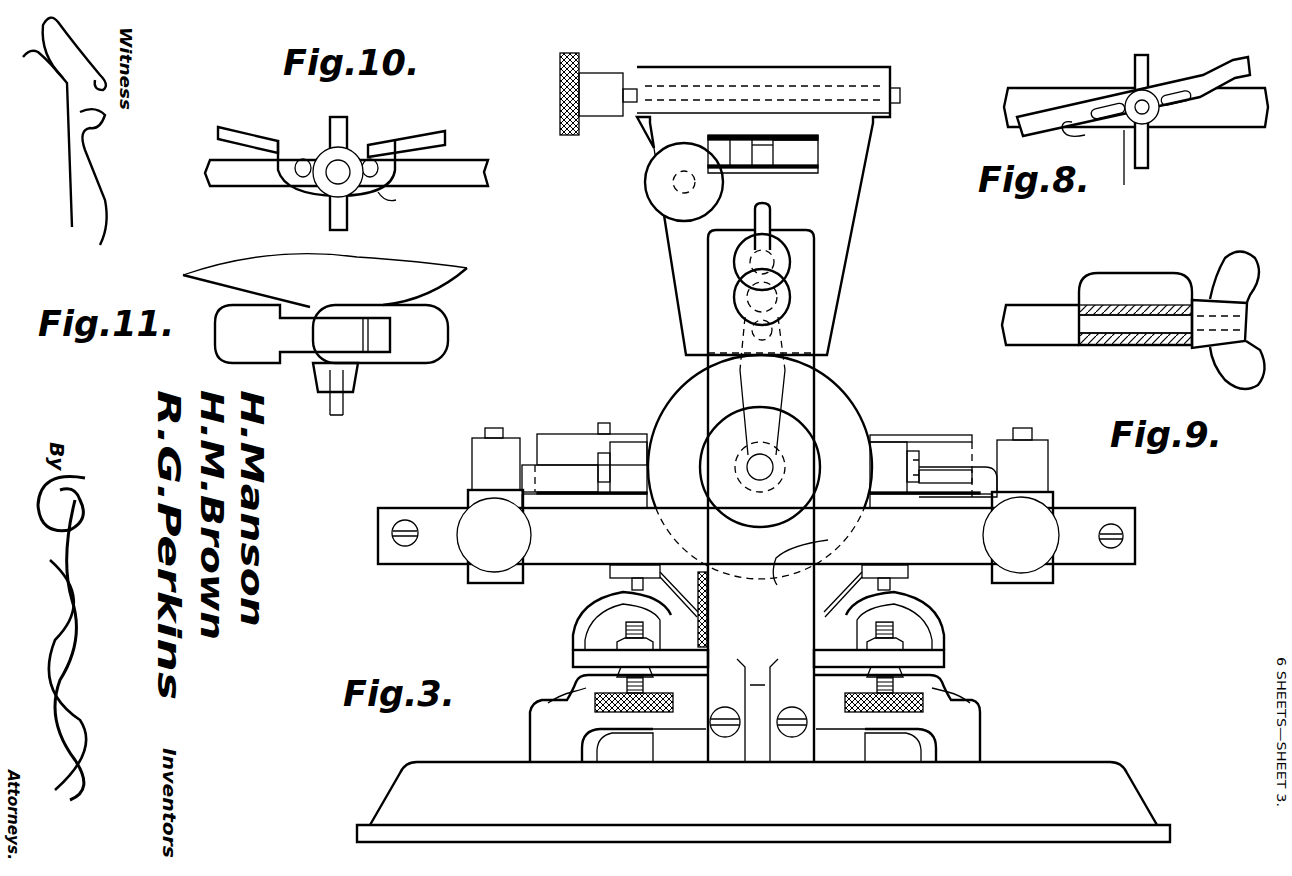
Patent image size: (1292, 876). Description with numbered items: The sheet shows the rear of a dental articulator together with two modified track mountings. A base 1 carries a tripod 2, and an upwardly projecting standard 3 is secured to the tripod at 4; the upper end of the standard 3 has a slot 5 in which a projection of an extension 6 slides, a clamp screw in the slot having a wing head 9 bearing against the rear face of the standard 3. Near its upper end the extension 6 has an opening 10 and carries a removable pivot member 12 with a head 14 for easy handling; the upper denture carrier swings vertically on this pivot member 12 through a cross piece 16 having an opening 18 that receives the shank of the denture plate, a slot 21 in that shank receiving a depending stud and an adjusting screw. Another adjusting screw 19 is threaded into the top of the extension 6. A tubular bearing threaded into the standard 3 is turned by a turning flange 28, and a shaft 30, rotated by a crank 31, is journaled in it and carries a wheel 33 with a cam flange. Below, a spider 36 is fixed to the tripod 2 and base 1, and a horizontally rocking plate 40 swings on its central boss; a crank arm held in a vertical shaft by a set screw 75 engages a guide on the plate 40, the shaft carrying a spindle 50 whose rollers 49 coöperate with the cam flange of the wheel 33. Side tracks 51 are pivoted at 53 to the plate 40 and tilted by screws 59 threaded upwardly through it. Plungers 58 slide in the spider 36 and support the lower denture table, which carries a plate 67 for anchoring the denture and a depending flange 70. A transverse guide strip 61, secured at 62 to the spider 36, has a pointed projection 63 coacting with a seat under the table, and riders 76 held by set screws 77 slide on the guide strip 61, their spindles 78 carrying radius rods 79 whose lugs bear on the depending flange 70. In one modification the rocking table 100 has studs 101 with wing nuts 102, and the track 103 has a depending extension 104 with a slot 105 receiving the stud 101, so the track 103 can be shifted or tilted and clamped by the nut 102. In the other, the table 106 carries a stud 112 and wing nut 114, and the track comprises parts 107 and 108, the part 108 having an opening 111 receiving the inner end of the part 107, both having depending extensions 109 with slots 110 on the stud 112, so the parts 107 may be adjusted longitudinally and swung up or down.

In FIG. 3, the base 1 is at (1140, 805).
In FIG. 3, the tripod 2 is at (980, 732).
In FIG. 3, the standard 3 is at (806, 553).
In FIG. 3, the securing point 4 is at (795, 737).
In FIG. 3, the slot 5 is at (775, 224).
In FIG. 3, the extension 6 is at (850, 175).
In FIG. 3, the wing head 9 is at (755, 217).
In FIG. 3, the opening 10 is at (822, 140).
In FIG. 3, the pivot member 12 is at (900, 92).
In FIG. 3, the head 14 is at (560, 90).
In FIG. 3, the cross piece 16 is at (795, 137).
In FIG. 3, the opening 18 is at (736, 140).
In FIG. 3, the adjusting screw 19 is at (660, 190).
In FIG. 3, the slot 21 is at (760, 150).
In FIG. 3, the turning flange 28 is at (807, 445).
In FIG. 3, the shaft 30 is at (752, 472).
In FIG. 3, the crank 31 is at (770, 422).
In FIG. 3, the wheel 33 is at (677, 402).
In FIG. 3, the spider 36 is at (615, 573).
In FIG. 3, the plate 40 is at (945, 645).
In FIG. 3, the rollers 49 is at (632, 482).
In FIG. 3, the spindle 50 is at (918, 470).
In FIG. 3, the side tracks 51 is at (583, 620).
In FIG. 3, the pivot 53 is at (567, 652).
In FIG. 3, the plungers 58 is at (632, 588).
In FIG. 3, the screws 59 is at (603, 712).
In FIG. 3, the transverse guide strip 61 is at (1092, 518).
In FIG. 3, the securing point 62 is at (1120, 530).
In FIG. 3, the projection 63 is at (408, 545).
In FIG. 3, the plate 67 is at (617, 427).
In FIG. 3, the depending flange 70 is at (558, 448).
In FIG. 3, the set screw 75 is at (703, 598).
In FIG. 3, the riders 76 is at (467, 578).
In FIG. 3, the set screws 77 is at (758, 535).
In FIG. 3, the spindles 78 is at (490, 428).
In FIG. 3, the radius rods 79 is at (528, 462).
In FIG. 8, the horizontally rocking member 100 is at (1245, 122).
In FIG. 9, the horizontally rocking member 100 is at (1040, 300).
In FIG. 8, the studs 101 is at (1137, 105).
In FIG. 9, the studs 101 is at (1143, 322).
In FIG. 8, the wing nuts 102 is at (1148, 160).
In FIG. 9, the wing nuts 102 is at (1237, 260).
In FIG. 8, the track 103 is at (1232, 60).
In FIG. 9, the track 103 is at (1108, 285).
In FIG. 8, the depending extension 104 is at (1131, 168).
In FIG. 9, the depending extension 104 is at (1125, 345).
In FIG. 8, the slot 105 is at (1097, 108).
In FIG. 9, the slot 105 is at (1092, 345).
In FIG. 10, the table 106 is at (490, 173).
In FIG. 11, the table 106 is at (418, 273).
In FIG. 10, the track part 107 is at (243, 133).
In FIG. 11, the track part 107 is at (226, 348).
In FIG. 10, the track part 108 is at (435, 138).
In FIG. 11, the track part 108 is at (440, 334).
In FIG. 10, the depending extensions 109 is at (392, 202).
In FIG. 10, the slots 110 is at (305, 160).
In FIG. 11, the opening 111 is at (381, 352).
In FIG. 10, the stud 112 is at (342, 166).
In FIG. 10, the wing nut 114 is at (330, 216).
In FIG. 11, the wing nut 114 is at (343, 418).